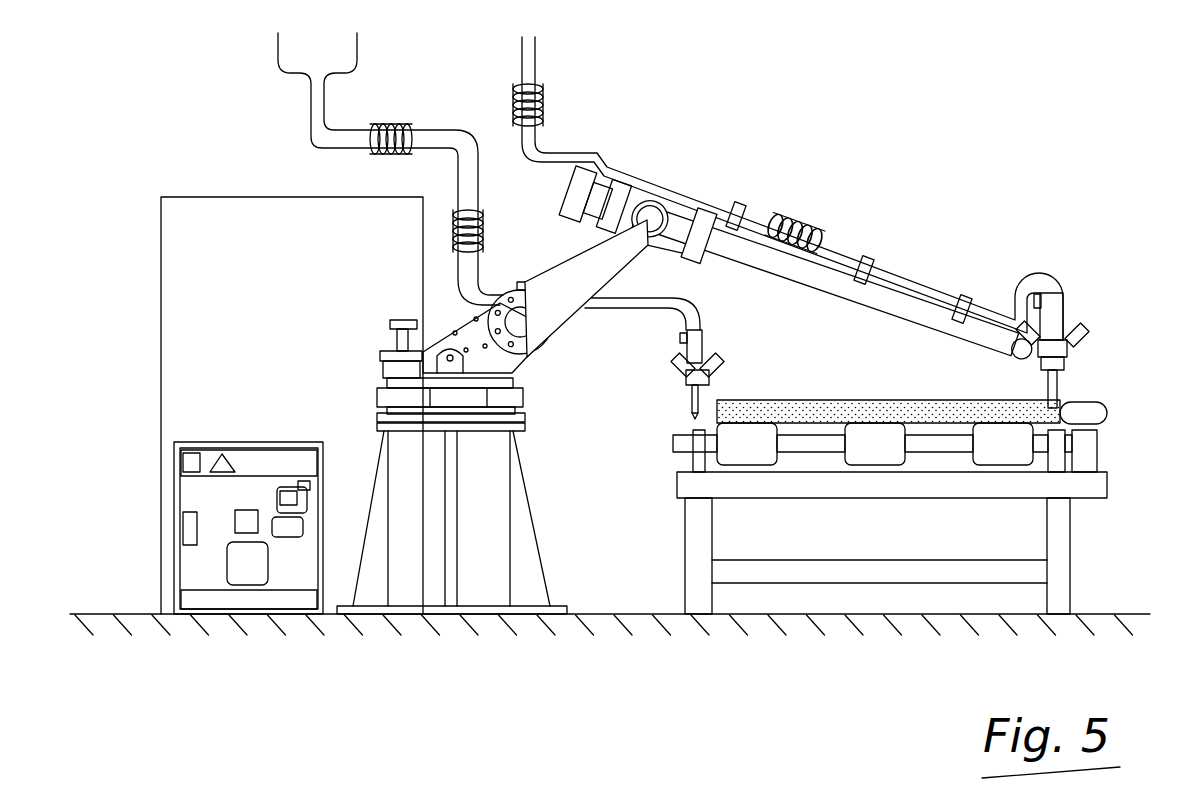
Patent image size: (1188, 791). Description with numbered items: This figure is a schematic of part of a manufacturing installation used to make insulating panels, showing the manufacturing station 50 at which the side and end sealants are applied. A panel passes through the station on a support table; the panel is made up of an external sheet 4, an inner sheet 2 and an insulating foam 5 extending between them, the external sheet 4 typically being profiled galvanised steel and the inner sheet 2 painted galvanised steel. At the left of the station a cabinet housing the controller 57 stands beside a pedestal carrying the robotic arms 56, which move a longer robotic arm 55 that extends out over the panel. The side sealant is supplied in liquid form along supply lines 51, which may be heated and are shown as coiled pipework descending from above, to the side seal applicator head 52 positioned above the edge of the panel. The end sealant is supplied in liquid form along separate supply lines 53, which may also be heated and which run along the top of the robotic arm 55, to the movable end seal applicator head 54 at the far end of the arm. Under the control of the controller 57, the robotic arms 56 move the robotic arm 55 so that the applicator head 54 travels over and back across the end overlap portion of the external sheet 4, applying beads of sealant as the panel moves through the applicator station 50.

The manufacturing station 50 is at (848, 152).
The supply lines 51 is at (320, 127).
The side seal applicator head 52 is at (669, 413).
The supply lines 53 is at (548, 152).
The end seal applicator head 54 is at (1062, 407).
The robotic arm 55 is at (840, 283).
The robotic arms 56 is at (580, 268).
The controller 57 is at (190, 560).
The inner sheet 2 is at (768, 402).
The external sheet 4 is at (676, 415).
The insulating foam 5 is at (820, 410).